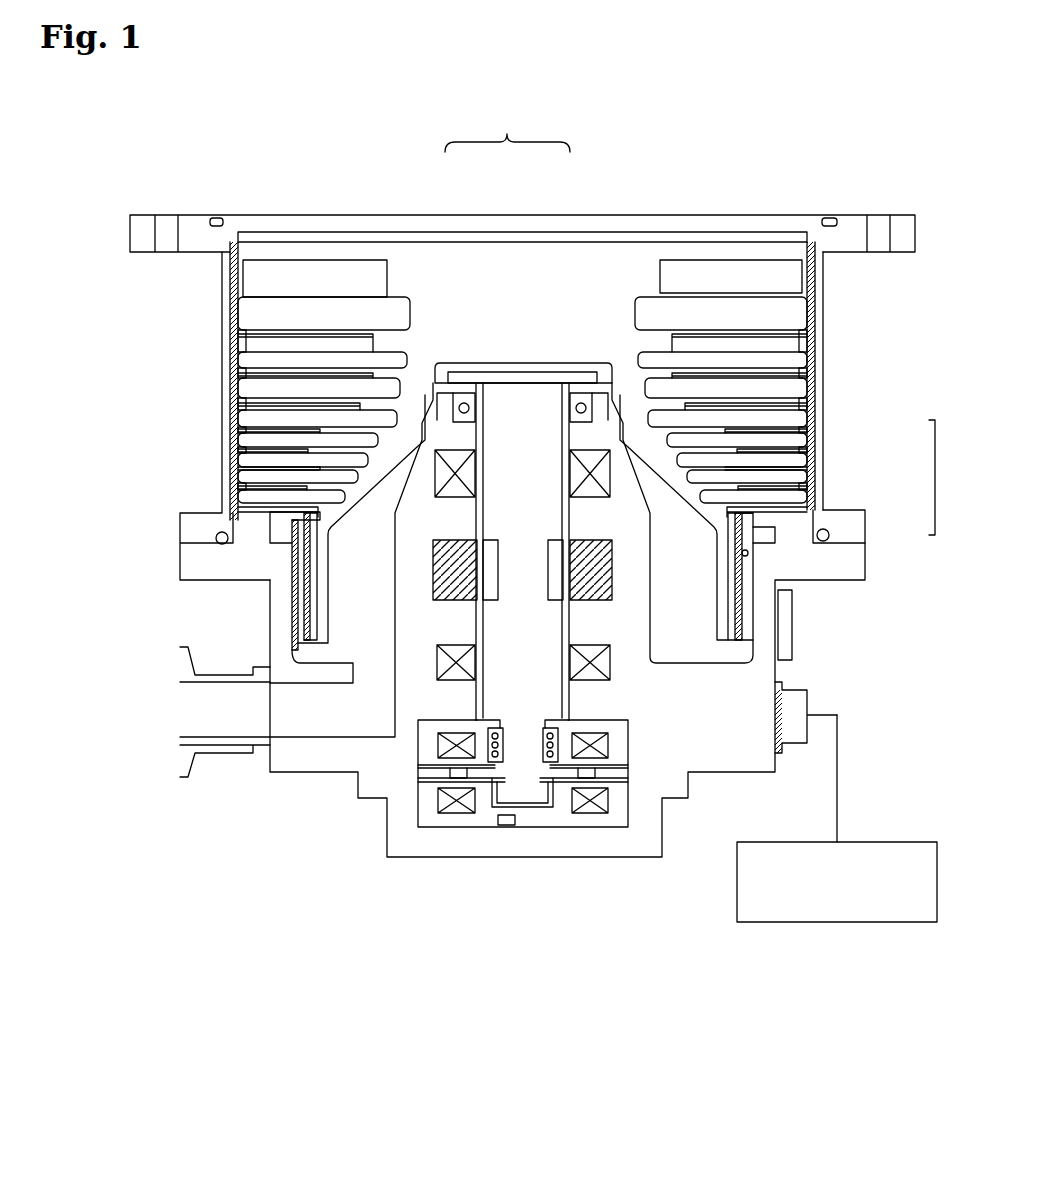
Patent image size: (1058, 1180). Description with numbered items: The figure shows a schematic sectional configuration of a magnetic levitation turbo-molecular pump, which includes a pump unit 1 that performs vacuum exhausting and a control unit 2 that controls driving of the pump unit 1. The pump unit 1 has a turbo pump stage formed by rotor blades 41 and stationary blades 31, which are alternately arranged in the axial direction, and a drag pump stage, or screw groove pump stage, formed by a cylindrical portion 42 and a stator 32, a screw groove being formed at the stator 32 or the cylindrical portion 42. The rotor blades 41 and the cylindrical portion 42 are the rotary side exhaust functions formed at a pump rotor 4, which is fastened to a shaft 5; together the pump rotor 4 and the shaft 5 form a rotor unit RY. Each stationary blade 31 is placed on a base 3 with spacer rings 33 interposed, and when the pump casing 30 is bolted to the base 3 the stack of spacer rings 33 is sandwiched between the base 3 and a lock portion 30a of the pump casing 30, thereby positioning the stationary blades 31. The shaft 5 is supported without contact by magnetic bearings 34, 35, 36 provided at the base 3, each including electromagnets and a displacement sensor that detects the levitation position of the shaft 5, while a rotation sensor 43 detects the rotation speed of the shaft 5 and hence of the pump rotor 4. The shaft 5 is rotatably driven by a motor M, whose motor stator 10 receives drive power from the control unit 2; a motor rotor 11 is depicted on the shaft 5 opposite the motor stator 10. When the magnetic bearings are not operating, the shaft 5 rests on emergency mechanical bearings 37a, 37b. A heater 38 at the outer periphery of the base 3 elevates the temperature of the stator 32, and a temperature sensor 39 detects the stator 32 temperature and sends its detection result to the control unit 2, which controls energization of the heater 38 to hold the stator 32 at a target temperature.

The pump unit 1 is at (712, 205).
The control unit 2 is at (827, 936).
The base 3 is at (405, 860).
The pump rotor 4 is at (497, 340).
The shaft 5 is at (523, 420).
The motor stator 10 is at (562, 574).
The motor rotor 11 is at (572, 580).
The pump casing 30 is at (220, 458).
The lock portion 30a is at (802, 233).
The stationary blades 31 is at (262, 317).
The stator 32 is at (300, 600).
The spacer rings 33 is at (233, 377).
The magnetic bearing 34 is at (603, 473).
The magnetic bearing 35 is at (443, 663).
The magnetic bearing 36 is at (463, 805).
The emergency mechanical bearing 37a is at (592, 407).
The emergency mechanical bearing 37b is at (552, 757).
The heater 38 is at (785, 625).
The temperature sensor 39 is at (757, 562).
The rotor blades 41 is at (258, 340).
The cylindrical portion 42 is at (318, 623).
The rotation sensor 43 is at (507, 828).
The rotor unit RY is at (507, 126).
The motor M is at (948, 477).